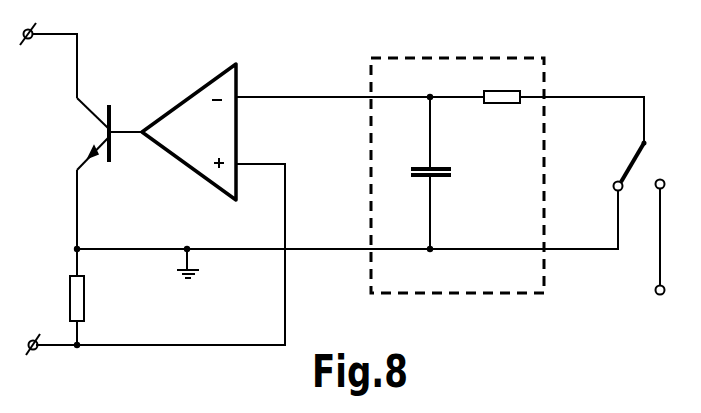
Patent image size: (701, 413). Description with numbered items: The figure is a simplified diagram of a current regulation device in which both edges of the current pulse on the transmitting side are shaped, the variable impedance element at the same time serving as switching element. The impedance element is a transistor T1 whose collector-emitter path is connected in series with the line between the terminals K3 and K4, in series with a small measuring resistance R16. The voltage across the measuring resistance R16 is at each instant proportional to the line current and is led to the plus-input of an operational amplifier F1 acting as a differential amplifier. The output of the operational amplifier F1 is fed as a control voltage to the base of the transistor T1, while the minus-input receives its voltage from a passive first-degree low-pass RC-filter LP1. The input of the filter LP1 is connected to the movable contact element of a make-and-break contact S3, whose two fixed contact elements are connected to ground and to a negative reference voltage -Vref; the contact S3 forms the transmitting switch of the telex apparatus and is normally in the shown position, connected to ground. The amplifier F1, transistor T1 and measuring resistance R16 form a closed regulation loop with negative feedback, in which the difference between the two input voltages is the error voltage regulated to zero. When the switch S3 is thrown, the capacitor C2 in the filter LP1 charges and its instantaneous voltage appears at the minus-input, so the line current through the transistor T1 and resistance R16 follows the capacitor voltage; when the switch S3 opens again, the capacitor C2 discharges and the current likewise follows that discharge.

The terminal K3 is at (33, 43).
The terminal K4 is at (35, 356).
The transistor T1 is at (117, 146).
The operational amplifier F1 is at (190, 118).
The measuring resistance R16 is at (85, 307).
The low-pass RC-filter LP1 is at (436, 57).
The capacitor C2 is at (444, 176).
The make-and-break contact S3 is at (647, 167).
The negative reference voltage Vref is at (638, 309).